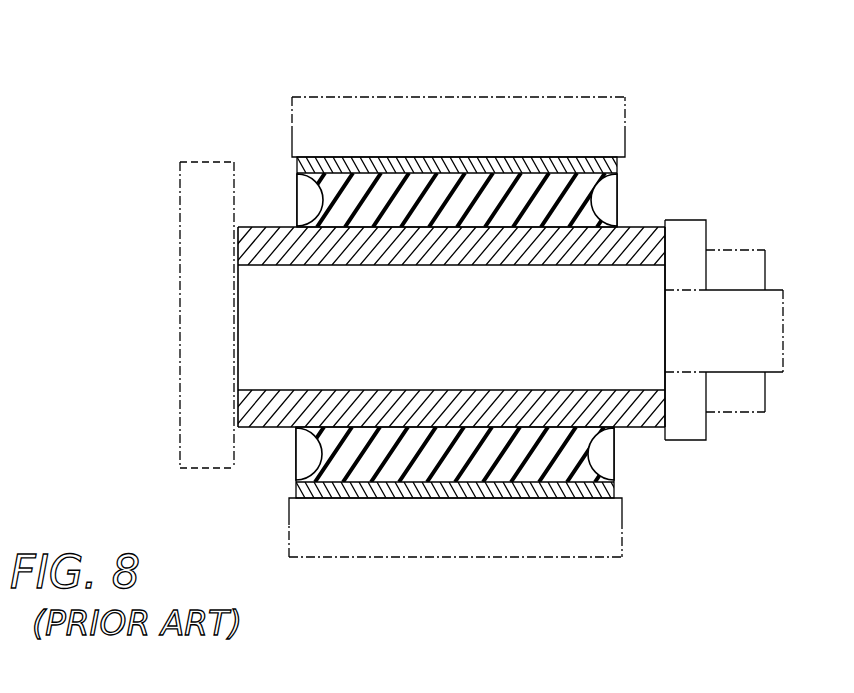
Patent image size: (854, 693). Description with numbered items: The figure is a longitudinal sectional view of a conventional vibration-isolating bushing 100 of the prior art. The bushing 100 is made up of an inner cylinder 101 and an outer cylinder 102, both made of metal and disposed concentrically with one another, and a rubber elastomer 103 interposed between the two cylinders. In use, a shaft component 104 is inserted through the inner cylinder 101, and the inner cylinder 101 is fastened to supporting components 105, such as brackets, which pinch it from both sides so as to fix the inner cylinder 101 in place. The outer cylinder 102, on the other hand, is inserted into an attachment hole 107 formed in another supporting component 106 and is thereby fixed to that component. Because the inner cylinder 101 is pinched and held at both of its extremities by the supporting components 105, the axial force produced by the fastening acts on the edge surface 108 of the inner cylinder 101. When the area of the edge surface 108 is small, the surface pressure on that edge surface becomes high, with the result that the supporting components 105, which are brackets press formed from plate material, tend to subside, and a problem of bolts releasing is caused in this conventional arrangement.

The bushing 100 is at (516, 24).
The inner cylinder 101 is at (463, 142).
The outer cylinder 102 is at (356, 158).
The rubber elastomer 103 is at (473, 532).
The shaft component 104 is at (629, 362).
The supporting components 105 is at (203, 172).
The supporting component 106 is at (419, 106).
The attachment hole 107 is at (355, 497).
The edge surface 108 is at (668, 252).